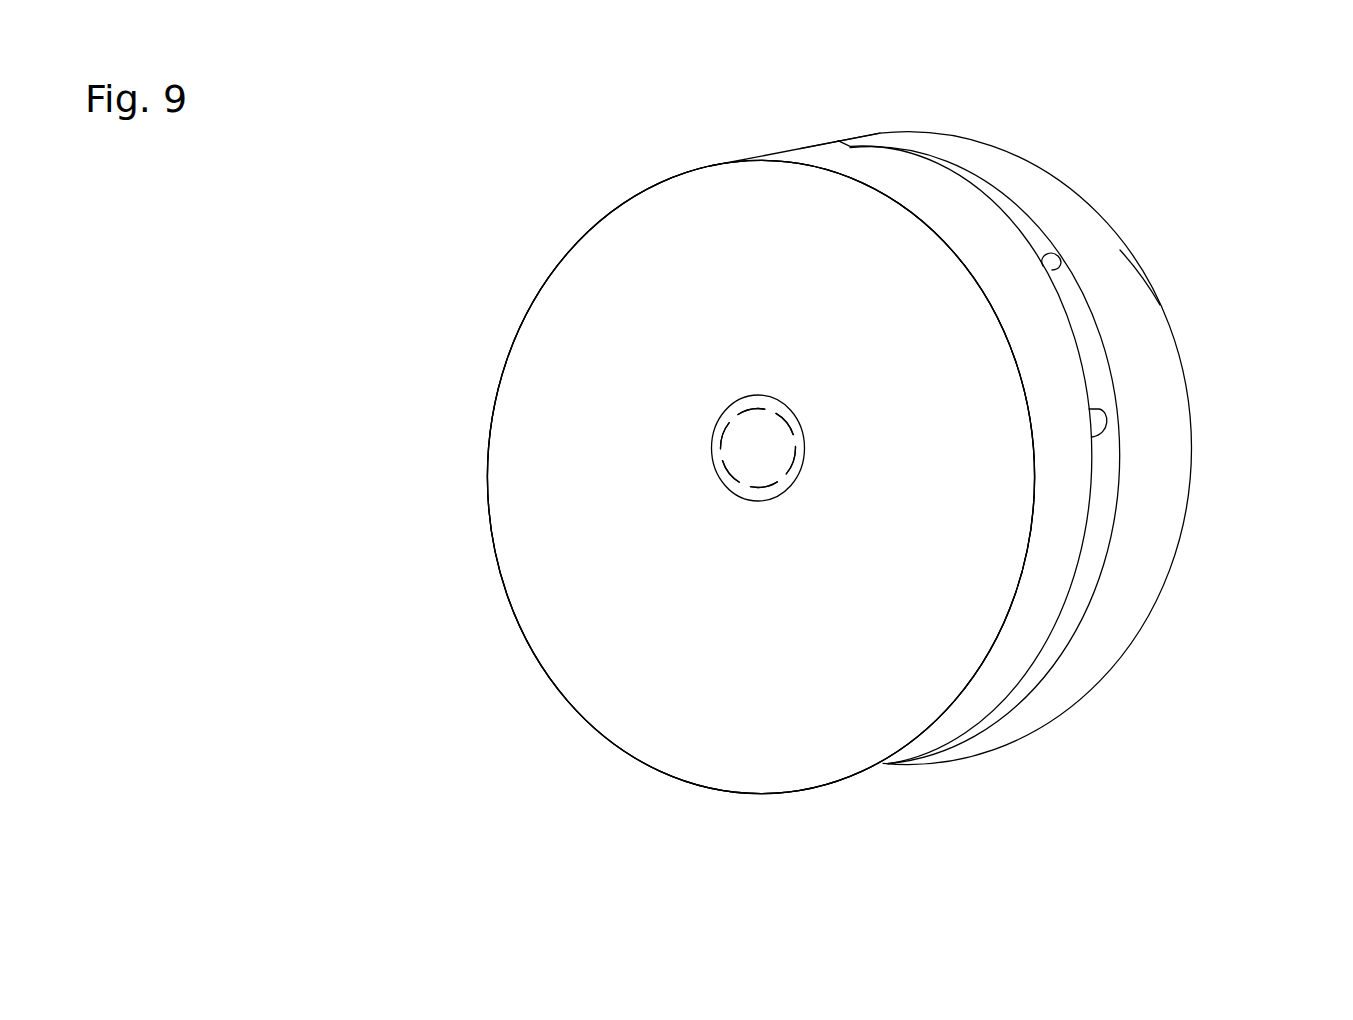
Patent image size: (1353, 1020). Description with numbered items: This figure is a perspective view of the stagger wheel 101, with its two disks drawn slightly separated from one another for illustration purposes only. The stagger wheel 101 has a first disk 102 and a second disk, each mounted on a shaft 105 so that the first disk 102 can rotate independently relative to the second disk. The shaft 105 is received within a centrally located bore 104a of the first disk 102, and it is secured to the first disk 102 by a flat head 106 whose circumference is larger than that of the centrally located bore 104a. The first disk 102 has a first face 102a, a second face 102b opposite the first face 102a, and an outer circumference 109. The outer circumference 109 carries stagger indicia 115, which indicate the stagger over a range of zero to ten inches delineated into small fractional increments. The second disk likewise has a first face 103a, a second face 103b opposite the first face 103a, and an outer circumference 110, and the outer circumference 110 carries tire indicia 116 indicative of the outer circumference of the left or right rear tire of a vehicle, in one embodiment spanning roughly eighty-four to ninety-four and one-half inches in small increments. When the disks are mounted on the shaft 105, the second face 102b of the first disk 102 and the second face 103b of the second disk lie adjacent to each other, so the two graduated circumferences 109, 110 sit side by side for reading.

The stagger wheel 101 is at (282, 260).
The first disk 102 is at (583, 312).
The first face 102a is at (532, 487).
The second face 102b is at (1089, 410).
The first face 103a is at (1158, 283).
The second face 103b is at (1060, 265).
The centrally located bore 104a is at (723, 462).
The shaft 105 is at (757, 427).
The flat head 106 is at (783, 490).
The outer circumference 109 is at (618, 205).
The outer circumference 110 is at (1165, 368).
The stagger indicia 115 is at (882, 177).
The tire indicia 116 is at (1157, 442).